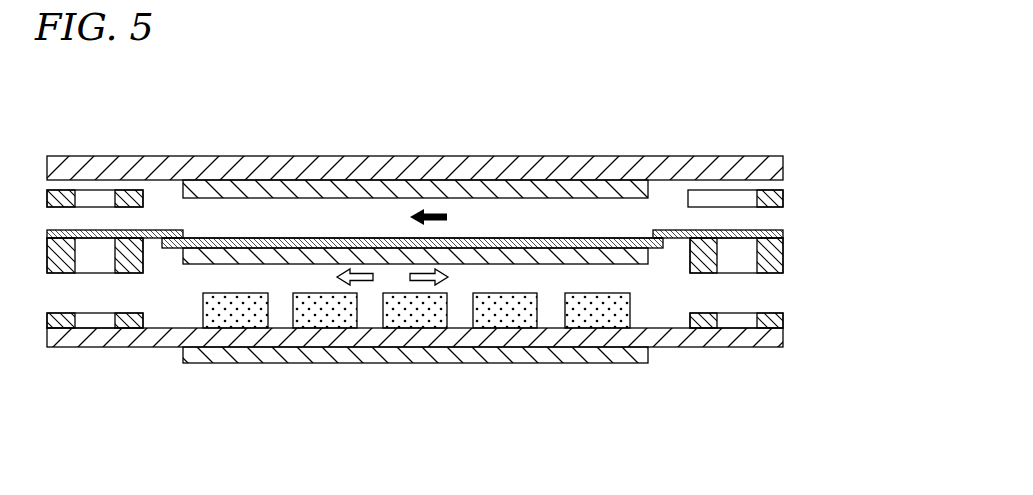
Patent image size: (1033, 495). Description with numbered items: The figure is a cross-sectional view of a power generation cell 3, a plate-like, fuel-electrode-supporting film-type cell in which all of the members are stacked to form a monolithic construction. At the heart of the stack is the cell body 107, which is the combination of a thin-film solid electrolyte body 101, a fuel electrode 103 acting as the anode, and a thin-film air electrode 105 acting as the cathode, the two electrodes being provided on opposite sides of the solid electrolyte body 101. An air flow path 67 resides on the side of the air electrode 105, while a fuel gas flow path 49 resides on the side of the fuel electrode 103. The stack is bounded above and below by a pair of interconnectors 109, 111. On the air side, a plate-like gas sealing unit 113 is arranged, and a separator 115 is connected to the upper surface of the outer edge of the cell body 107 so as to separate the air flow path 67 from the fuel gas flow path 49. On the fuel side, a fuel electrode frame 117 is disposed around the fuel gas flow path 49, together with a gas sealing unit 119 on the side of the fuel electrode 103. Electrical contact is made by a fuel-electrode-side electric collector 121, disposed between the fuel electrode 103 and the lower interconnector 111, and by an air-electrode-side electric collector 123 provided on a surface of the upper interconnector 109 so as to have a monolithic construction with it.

The power generation cell 3 is at (805, 138).
The fuel gas flow path 49 is at (373, 310).
The air flow path 67 is at (388, 212).
The solid electrolyte body 101 is at (453, 242).
The fuel electrode 103 is at (457, 257).
The air electrode 105 is at (477, 233).
The cell body 107 is at (412, 352).
The interconnector 109 is at (463, 167).
The interconnector 111 is at (685, 340).
The gas sealing unit 113 is at (786, 192).
The separator 115 is at (785, 234).
The fuel electrode frame 117 is at (785, 250).
The gas sealing unit 119 is at (785, 330).
The fuel-electrode-side electric collector 121 is at (614, 320).
The air-electrode-side electric collector 123 is at (555, 192).